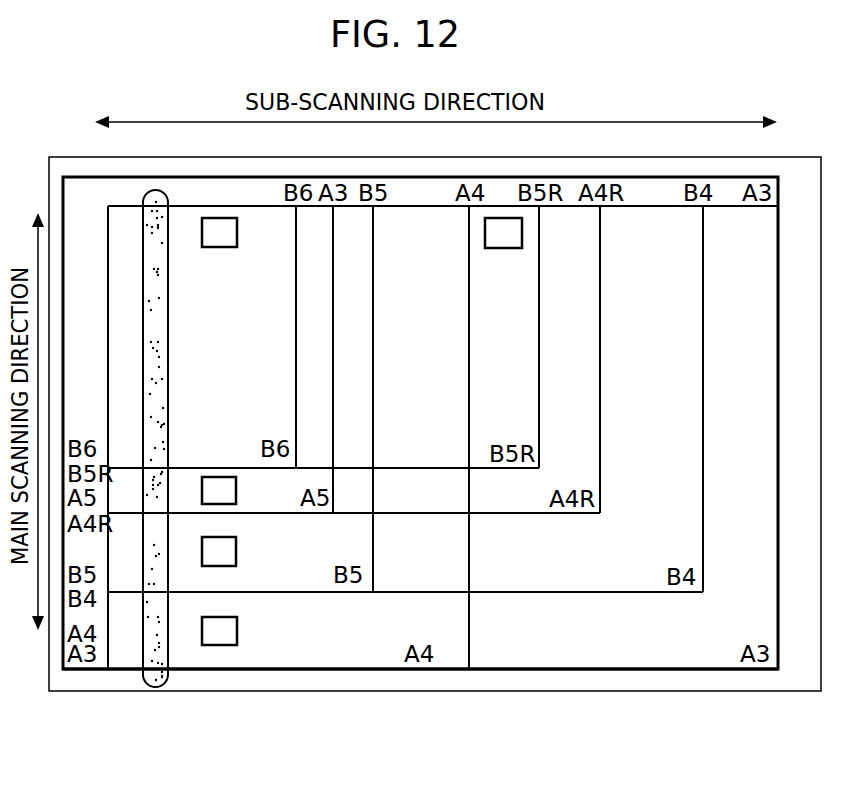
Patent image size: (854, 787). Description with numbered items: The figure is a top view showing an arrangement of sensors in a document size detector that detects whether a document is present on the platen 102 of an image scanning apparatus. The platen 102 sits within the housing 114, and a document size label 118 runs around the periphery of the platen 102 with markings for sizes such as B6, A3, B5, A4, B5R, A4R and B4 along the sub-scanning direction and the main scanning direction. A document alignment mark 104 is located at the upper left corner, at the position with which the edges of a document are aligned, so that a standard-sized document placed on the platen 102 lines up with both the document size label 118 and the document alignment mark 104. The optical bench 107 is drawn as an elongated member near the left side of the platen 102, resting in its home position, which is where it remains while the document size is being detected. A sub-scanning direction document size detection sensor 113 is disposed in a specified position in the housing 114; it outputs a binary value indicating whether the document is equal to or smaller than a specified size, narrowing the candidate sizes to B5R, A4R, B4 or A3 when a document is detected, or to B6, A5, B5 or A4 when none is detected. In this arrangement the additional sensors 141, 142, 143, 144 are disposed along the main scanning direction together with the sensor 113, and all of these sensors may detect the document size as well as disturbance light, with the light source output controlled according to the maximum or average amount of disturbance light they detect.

The platen 102 is at (543, 669).
The document alignment mark 104 is at (107, 206).
The optical bench 107 is at (167, 196).
The sub-scanning direction document size detection sensor 113 is at (505, 249).
The housing 114 is at (658, 691).
The document size label 118 is at (768, 180).
The sensor 141 is at (217, 247).
The sensor 142 is at (212, 477).
The sensor 143 is at (237, 548).
The sensor 144 is at (237, 630).